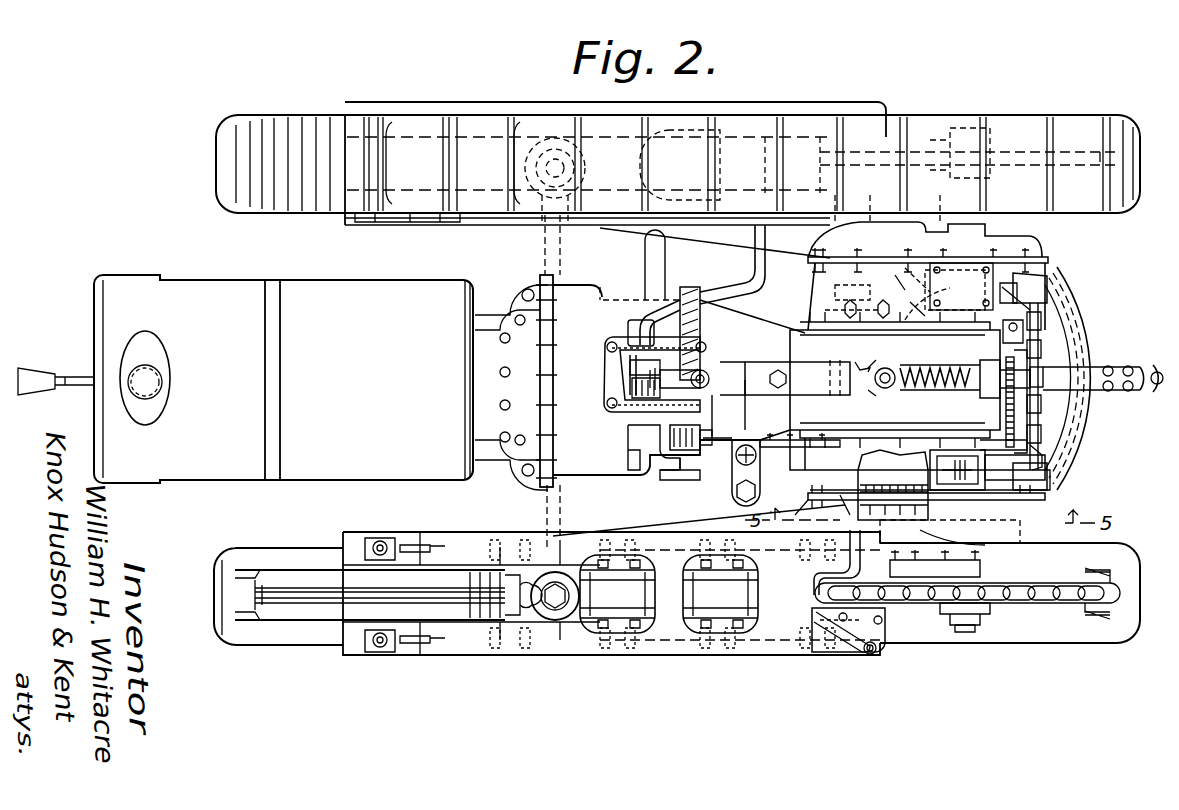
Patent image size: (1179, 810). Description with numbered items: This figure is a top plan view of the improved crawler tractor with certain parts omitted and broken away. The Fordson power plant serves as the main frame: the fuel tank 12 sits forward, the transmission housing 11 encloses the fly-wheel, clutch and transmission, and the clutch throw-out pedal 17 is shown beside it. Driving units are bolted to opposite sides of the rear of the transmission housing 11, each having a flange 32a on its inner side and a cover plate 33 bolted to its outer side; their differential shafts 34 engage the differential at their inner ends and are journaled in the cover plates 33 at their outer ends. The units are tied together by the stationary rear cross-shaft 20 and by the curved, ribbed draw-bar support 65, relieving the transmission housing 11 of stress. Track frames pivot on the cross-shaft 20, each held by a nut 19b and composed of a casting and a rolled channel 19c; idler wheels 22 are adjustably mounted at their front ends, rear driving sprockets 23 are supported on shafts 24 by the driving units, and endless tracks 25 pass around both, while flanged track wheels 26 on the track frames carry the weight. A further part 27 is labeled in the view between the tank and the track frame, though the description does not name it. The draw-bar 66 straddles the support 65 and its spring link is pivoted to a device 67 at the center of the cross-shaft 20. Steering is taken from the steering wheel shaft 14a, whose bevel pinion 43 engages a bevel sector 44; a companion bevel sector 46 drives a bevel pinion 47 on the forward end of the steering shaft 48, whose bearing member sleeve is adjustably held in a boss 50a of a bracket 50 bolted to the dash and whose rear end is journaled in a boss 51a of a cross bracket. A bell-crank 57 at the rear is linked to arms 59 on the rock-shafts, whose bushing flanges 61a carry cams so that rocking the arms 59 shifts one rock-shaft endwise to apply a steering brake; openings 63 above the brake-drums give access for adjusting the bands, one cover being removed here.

The transmission housing 11 is at (772, 335).
The fuel tank 12 is at (410, 478).
The steering wheel shaft 14a is at (705, 372).
The clutch throw-out pedal 17 is at (755, 266).
The nut 19b is at (950, 548).
The channel 19c is at (900, 612).
The rear cross-shaft 20 is at (840, 348).
The idler wheels 22 is at (302, 622).
The rear driving sprockets 23 is at (1065, 604).
The shafts 24 is at (978, 618).
The endless tracks 25 is at (216, 198).
The flanged track wheels 26 is at (724, 613).
The link 27 is at (545, 258).
The flange 32a is at (815, 445).
The cover plate 33 is at (810, 495).
The differential shafts 34 is at (893, 485).
The bevel pinion 43 is at (628, 370).
The bevel sector 44 is at (632, 388).
The bevel sector 46 is at (670, 478).
The bevel pinion 47 is at (628, 440).
The steering shaft 48 is at (760, 442).
The bracket 50 is at (702, 430).
The boss 50a is at (706, 452).
The boss 51a is at (1045, 458).
The bell-crank 57 is at (1090, 420).
The arms 59 is at (1048, 283).
The flanges 61a is at (1047, 288).
The openings 63 is at (935, 462).
The draw-bar support 65 is at (1075, 328).
The draw-bar 66 is at (1120, 366).
The device 67 is at (873, 356).